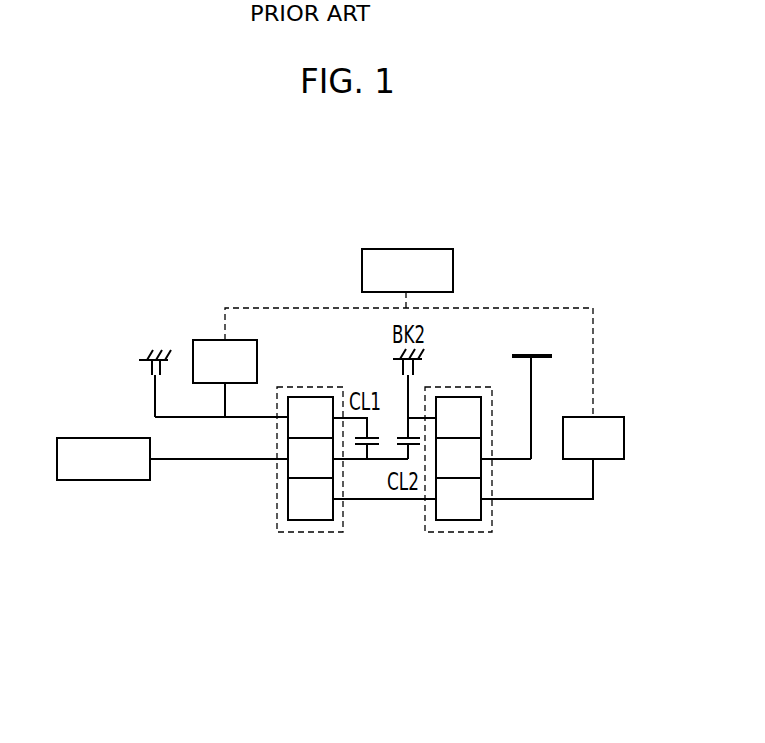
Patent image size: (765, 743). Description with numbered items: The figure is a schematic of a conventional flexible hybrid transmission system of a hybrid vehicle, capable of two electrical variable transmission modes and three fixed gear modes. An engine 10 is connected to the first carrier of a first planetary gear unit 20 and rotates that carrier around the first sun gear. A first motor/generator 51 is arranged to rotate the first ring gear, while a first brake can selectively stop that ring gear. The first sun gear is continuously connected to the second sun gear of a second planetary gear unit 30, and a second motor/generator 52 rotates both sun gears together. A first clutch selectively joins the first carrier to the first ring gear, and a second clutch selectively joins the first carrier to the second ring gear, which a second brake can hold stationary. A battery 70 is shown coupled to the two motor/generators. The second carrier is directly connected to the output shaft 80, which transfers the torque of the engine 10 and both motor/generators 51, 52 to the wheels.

The engine 10 is at (103, 481).
The first planetary gear unit 20 is at (310, 533).
The second planetary gear unit 30 is at (456, 533).
The first motor/generator 51 is at (207, 339).
The second motor/generator 52 is at (606, 416).
The battery 70 is at (406, 248).
The output shaft 80 is at (530, 325).